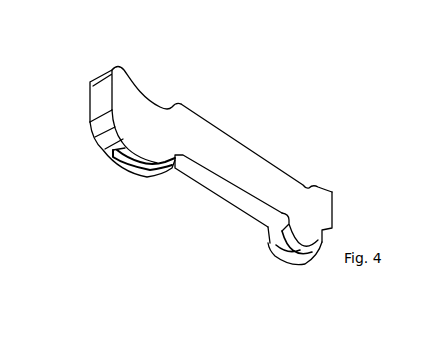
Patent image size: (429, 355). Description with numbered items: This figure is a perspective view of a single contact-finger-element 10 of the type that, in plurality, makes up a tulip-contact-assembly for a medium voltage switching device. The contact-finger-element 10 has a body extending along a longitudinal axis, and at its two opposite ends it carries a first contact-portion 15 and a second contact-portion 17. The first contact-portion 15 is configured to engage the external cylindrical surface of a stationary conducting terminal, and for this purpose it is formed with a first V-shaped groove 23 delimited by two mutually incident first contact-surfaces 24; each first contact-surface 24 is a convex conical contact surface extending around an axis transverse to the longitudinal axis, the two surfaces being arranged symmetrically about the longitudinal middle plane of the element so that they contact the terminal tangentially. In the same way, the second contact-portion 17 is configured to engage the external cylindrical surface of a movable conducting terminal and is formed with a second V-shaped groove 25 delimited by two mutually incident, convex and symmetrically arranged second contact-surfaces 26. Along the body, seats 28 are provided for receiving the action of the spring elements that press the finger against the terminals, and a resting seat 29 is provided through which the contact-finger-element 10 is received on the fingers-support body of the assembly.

The contact-finger-element 10 is at (253, 170).
The first contact-portion 15 is at (133, 117).
The second contact-portion 17 is at (313, 215).
The first V-shaped groove 23 is at (140, 186).
The first contact-surfaces 24 is at (150, 166).
The second V-shaped groove 25 is at (300, 283).
The second contact-surfaces 26 is at (290, 263).
The seats 28 is at (147, 98).
The resting seat 29 is at (217, 183).